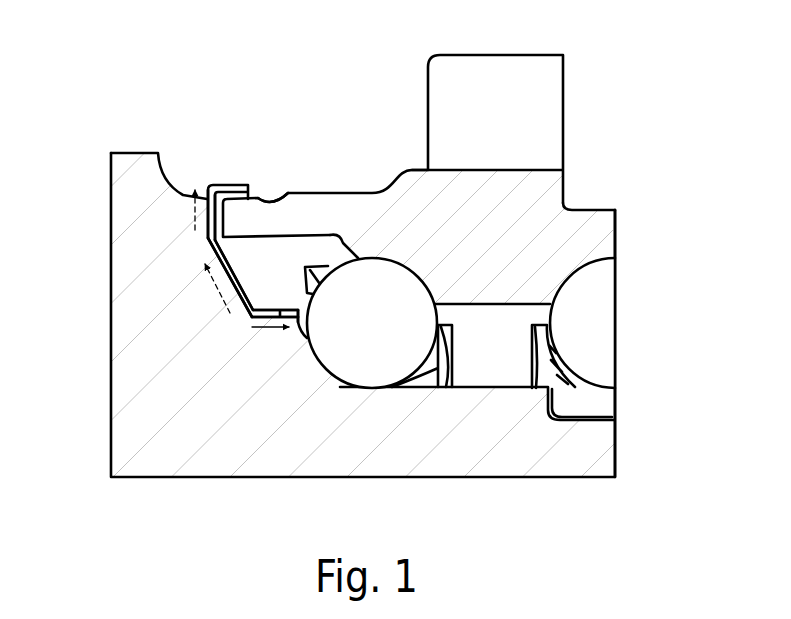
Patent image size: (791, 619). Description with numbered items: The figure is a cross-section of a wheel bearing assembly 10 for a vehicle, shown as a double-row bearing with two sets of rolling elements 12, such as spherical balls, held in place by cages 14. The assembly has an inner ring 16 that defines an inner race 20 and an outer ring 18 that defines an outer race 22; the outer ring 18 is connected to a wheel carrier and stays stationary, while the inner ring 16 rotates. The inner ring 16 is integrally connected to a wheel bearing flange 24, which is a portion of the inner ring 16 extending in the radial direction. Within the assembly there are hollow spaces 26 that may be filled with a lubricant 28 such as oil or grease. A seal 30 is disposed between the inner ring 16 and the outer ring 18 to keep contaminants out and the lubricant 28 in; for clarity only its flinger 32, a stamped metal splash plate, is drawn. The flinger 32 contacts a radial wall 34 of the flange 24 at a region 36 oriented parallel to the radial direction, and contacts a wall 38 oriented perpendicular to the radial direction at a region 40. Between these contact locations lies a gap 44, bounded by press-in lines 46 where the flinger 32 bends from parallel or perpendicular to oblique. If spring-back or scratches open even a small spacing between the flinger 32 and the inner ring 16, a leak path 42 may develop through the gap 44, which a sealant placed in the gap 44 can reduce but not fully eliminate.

The wheel bearing assembly 10 is at (232, 80).
The rolling elements 12 is at (408, 323).
The cages 14 is at (541, 333).
The inner ring 16 is at (530, 458).
The outer ring 18 is at (383, 207).
The inner race 20 is at (343, 387).
The outer race 22 is at (425, 272).
The wheel bearing flange 24 is at (127, 172).
The hollow spaces 26 is at (309, 308).
The lubricant 28 is at (344, 246).
The seal 30 is at (235, 182).
The flinger 32 is at (225, 267).
The radial wall 34 is at (206, 196).
The region 36 is at (204, 216).
The wall 38 is at (299, 345).
The region 40 is at (291, 319).
The leak path 42 is at (191, 186).
The gap 44 is at (228, 299).
The press-in line 46 is at (205, 232).